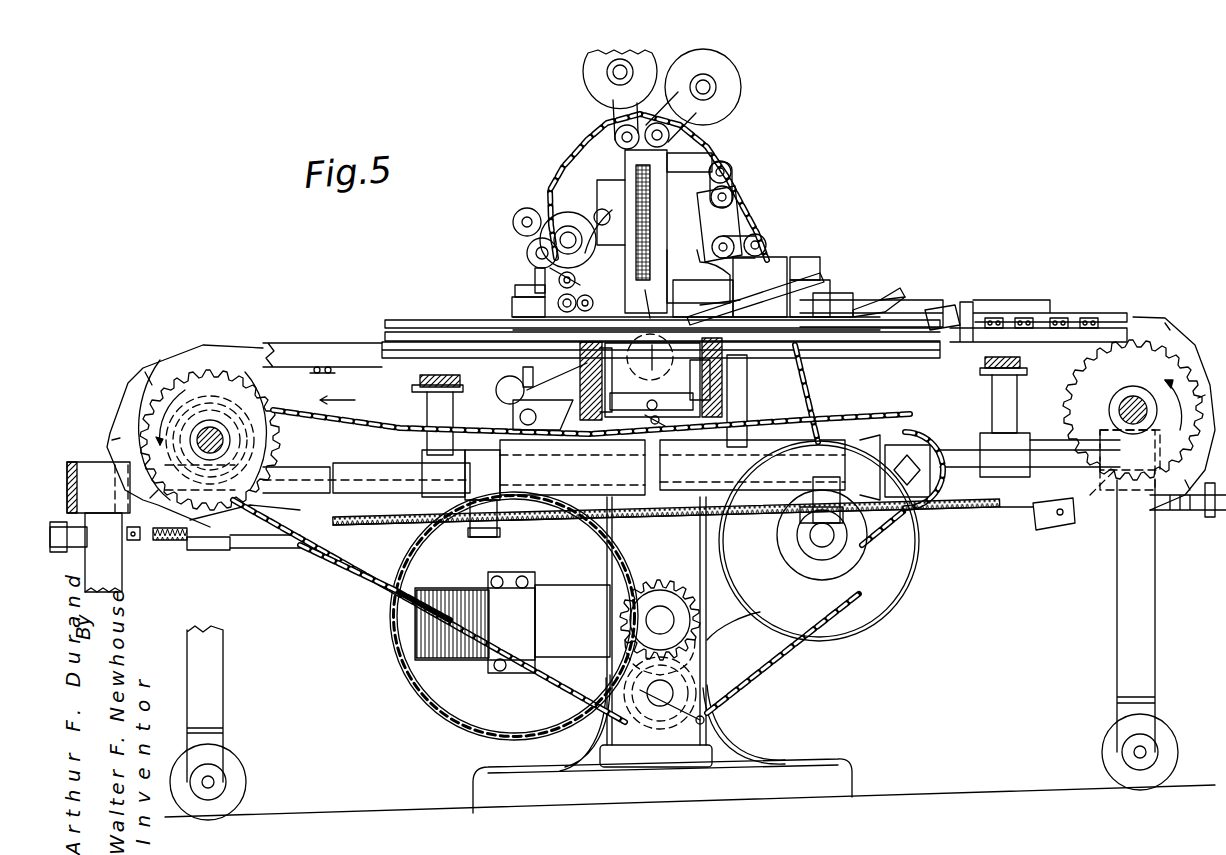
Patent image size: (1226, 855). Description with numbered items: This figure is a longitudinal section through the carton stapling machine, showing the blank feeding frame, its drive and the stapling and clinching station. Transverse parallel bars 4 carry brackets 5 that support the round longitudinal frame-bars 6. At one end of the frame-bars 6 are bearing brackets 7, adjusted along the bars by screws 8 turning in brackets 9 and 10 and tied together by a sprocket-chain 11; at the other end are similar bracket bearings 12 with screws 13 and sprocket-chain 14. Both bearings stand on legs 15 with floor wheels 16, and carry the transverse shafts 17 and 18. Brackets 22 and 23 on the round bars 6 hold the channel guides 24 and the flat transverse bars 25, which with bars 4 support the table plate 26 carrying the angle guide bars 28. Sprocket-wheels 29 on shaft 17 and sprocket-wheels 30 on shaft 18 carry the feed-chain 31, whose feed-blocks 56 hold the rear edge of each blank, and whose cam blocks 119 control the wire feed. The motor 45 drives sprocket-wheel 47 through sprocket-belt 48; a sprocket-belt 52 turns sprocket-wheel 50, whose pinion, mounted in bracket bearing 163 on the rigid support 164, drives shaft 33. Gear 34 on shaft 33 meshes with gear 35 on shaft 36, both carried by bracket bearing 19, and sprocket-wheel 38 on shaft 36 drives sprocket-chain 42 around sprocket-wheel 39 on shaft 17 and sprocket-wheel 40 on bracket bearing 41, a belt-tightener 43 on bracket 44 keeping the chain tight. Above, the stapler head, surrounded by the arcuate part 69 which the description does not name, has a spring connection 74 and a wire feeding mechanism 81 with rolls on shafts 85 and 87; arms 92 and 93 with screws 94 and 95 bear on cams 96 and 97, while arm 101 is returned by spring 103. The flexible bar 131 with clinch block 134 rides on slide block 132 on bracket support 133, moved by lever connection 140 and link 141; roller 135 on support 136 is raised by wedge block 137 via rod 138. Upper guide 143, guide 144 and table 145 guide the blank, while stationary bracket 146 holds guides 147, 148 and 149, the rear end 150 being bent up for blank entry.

The parallel bars 4 is at (570, 450).
The brackets 5 is at (570, 430).
The frame-bars 6 is at (340, 470).
The bearing brackets 7 is at (205, 545).
The screws 8 is at (165, 540).
The bracket 9 is at (110, 540).
The bracket 10 is at (480, 540).
The sprocket-chain 11 is at (70, 552).
The bracket bearings 12 is at (1120, 480).
The screws 13 is at (978, 515).
The sprocket-chain 14 is at (1210, 518).
The legs 15 is at (225, 664).
The wheels 16 is at (240, 772).
The shaft 17 is at (210, 440).
The shaft 18 is at (1135, 400).
The bracket bearing 19 is at (705, 718).
The bracket 22 is at (430, 408).
The bracket 23 is at (1002, 402).
The channel guides 24 is at (405, 340).
The flat transverse bars 25 is at (415, 385).
The table plate 26 is at (410, 330).
The angle guide bars 28 is at (428, 318).
The sprocket-wheels 29 is at (208, 430).
The sprocket-wheels 30 is at (1140, 395).
The feed-chain 31 is at (273, 343).
The shaft 33 is at (650, 618).
The gear 34 is at (658, 578).
The gear 35 is at (708, 655).
The shaft 36 is at (650, 690).
The sprocket-wheel 38 is at (700, 672).
The sprocket-wheel 39 is at (295, 395).
The sprocket-wheel 40 is at (885, 430).
The bracket bearing 41 is at (918, 445).
The sprocket-chain 42 is at (370, 425).
The belt-tightener 43 is at (513, 412).
The bracket 44 is at (515, 386).
The electric motor 45 is at (819, 541).
The sprocket-wheel 47 is at (752, 215).
The sprocket-belt 48 is at (810, 398).
The sprocket-wheel 50 is at (440, 700).
The sprocket-belt 52 is at (395, 630).
The feed-blocks 56 is at (930, 308).
The arcuate guide 69 is at (560, 130).
The spring connection 74 is at (655, 212).
The wire feeding mechanism 81 is at (512, 232).
The shaft 85 is at (566, 232).
The shaft 87 is at (528, 257).
The arm 92 is at (535, 272).
The arm 93 is at (518, 302).
The adjustable screw 94 is at (522, 288).
The adjustable screw 95 is at (560, 318).
The cam 96 is at (576, 281).
The cam 97 is at (588, 301).
The arm 101 is at (578, 272).
The spring 103 is at (578, 228).
The cam blocks 119 is at (1090, 298).
The bar 131 is at (720, 312).
The slide block 132 is at (760, 275).
The bracket support 133 is at (800, 262).
The clinch block 134 is at (648, 310).
The roller 135 is at (653, 370).
The vertically adjustable support 136 is at (712, 370).
The wedge block 137 is at (680, 388).
The rod 138 is at (648, 420).
The lever connection 140 is at (740, 195).
The link 141 is at (700, 170).
The upper guide 143 is at (760, 230).
The guide 144 is at (760, 250).
The table 145 is at (832, 358).
The stationary bracket 146 is at (810, 282).
The guide 147 is at (820, 310).
The guide 148 is at (896, 300).
The guide 149 is at (820, 295).
The rear end 150 is at (892, 298).
The bracket bearing 163 is at (510, 673).
The rigid support 164 is at (428, 648).